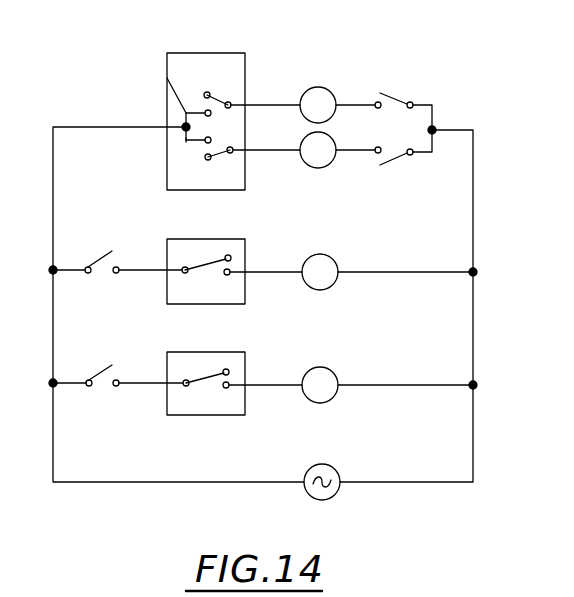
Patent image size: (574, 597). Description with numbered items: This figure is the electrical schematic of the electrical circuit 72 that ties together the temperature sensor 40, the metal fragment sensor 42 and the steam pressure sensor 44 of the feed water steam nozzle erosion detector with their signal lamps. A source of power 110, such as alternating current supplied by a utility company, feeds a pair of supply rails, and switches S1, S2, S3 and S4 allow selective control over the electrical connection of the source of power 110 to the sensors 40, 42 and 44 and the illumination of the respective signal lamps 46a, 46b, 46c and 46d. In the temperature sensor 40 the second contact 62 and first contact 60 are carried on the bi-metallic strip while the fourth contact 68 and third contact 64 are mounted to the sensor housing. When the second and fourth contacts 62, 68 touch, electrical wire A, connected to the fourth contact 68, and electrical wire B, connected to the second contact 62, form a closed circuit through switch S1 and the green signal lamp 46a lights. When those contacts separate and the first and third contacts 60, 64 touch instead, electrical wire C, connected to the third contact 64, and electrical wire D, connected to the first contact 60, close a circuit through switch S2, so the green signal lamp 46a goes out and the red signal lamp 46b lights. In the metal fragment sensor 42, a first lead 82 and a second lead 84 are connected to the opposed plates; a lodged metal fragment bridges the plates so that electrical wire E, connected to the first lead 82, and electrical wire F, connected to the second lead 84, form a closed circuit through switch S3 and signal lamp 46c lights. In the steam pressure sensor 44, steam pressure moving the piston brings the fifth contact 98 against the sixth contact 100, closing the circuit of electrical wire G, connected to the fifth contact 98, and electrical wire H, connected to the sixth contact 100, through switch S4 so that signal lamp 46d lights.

The temperature sensor 40 is at (191, 48).
The fourth contact 68 is at (209, 92).
The second contact 62 is at (211, 114).
The first contact 60 is at (205, 141).
The third contact 64 is at (205, 158).
The electrical wire A is at (241, 102).
The electrical wire B is at (167, 78).
The electrical wire C is at (234, 152).
The electrical wire D is at (188, 144).
The green signal lamp 46a is at (327, 88).
The red signal lamp 46b is at (313, 167).
The signal lamp 46c is at (334, 259).
The signal lamp 46d is at (334, 372).
The switch S1 is at (404, 99).
The switch S2 is at (414, 159).
The switch S3 is at (119, 252).
The switch S4 is at (120, 368).
The electrical circuit 72 is at (481, 165).
The metal fragment sensor 42 is at (249, 262).
The first lead 82 is at (228, 255).
The second lead 84 is at (229, 276).
The electrical wire E is at (185, 266).
The electrical wire F is at (230, 275).
The steam pressure sensor 44 is at (252, 370).
The fifth contact 98 is at (226, 369).
The sixth contact 100 is at (225, 389).
The electrical wire G is at (178, 387).
The electrical wire H is at (230, 389).
The source of power 110 is at (307, 494).